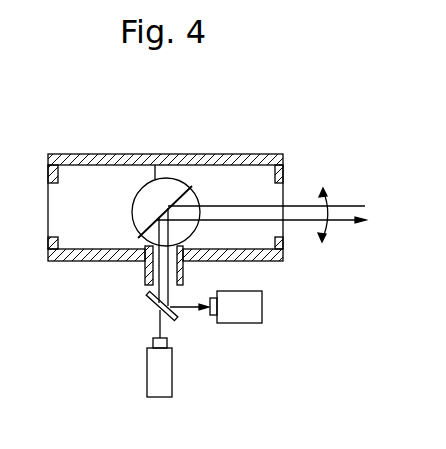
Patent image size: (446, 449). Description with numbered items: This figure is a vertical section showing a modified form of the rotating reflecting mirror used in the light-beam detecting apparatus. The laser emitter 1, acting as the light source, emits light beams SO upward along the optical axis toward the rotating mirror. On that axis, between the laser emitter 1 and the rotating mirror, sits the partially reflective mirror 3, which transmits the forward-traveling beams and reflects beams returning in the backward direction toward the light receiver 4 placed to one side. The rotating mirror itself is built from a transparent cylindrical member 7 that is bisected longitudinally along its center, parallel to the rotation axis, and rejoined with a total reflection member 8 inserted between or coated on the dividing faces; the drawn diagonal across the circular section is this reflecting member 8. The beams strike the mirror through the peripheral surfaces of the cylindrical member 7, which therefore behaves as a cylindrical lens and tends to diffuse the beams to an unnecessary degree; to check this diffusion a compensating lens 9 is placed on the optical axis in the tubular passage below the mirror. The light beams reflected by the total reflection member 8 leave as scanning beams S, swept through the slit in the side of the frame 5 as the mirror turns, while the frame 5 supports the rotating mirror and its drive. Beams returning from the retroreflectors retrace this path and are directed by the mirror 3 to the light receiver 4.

The laser emitter 1 is at (172, 375).
The partially reflective mirror 3 is at (148, 300).
The light receiver 4 is at (248, 324).
The frame 5 is at (82, 154).
The transparent cylindrical member 7 is at (156, 154).
The total reflection member 8 is at (187, 198).
The compensating lens 9 is at (178, 287).
The scanning light beams S is at (273, 215).
The light beams SO is at (151, 323).